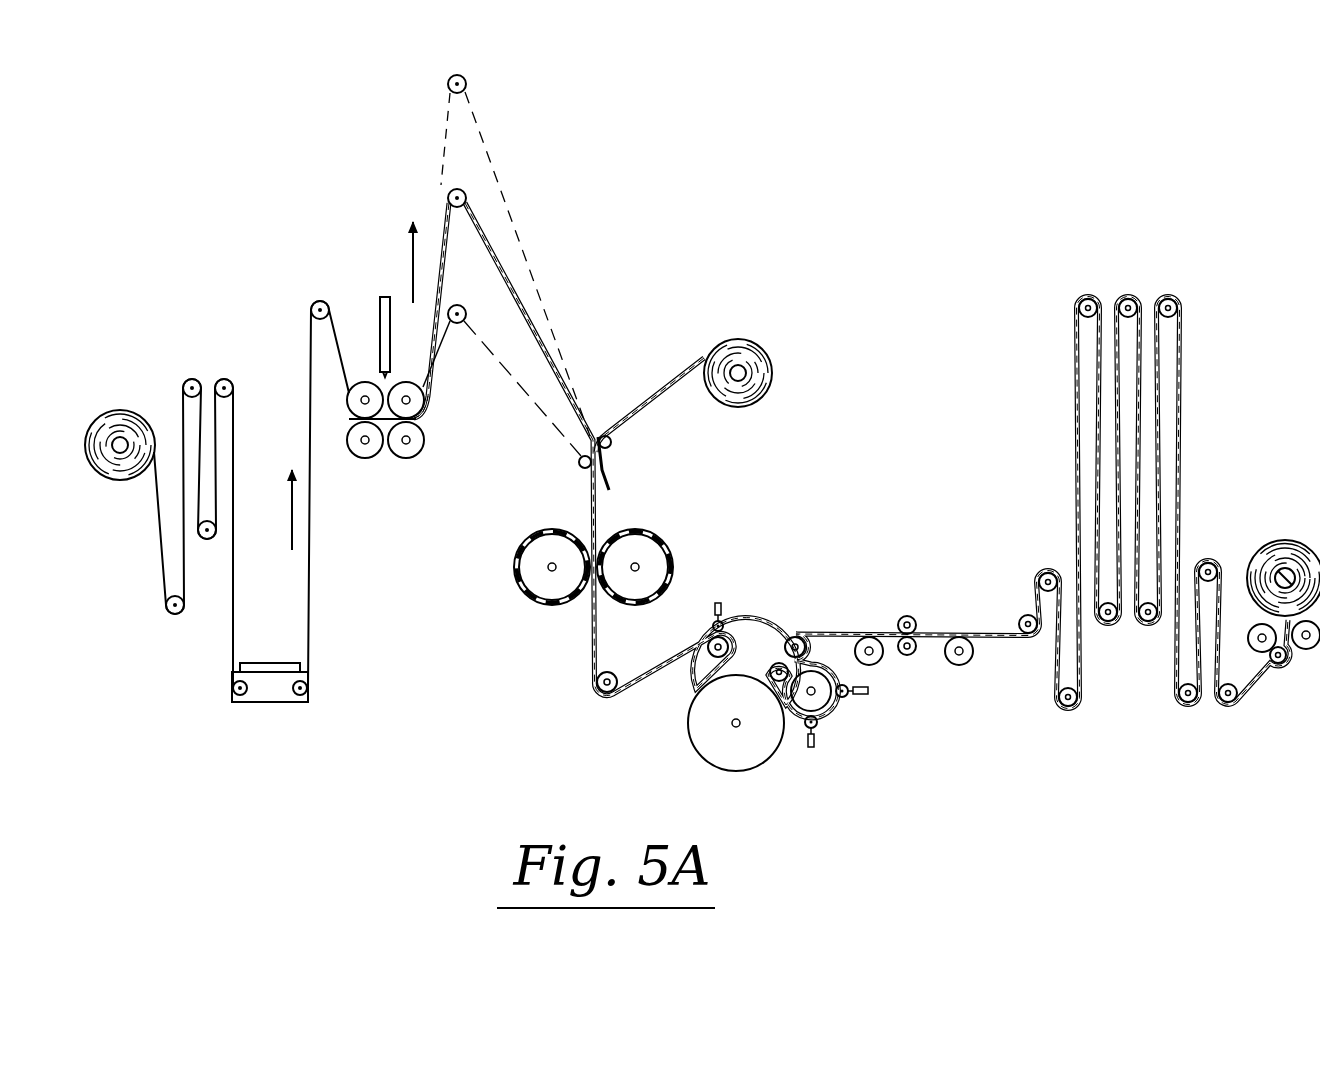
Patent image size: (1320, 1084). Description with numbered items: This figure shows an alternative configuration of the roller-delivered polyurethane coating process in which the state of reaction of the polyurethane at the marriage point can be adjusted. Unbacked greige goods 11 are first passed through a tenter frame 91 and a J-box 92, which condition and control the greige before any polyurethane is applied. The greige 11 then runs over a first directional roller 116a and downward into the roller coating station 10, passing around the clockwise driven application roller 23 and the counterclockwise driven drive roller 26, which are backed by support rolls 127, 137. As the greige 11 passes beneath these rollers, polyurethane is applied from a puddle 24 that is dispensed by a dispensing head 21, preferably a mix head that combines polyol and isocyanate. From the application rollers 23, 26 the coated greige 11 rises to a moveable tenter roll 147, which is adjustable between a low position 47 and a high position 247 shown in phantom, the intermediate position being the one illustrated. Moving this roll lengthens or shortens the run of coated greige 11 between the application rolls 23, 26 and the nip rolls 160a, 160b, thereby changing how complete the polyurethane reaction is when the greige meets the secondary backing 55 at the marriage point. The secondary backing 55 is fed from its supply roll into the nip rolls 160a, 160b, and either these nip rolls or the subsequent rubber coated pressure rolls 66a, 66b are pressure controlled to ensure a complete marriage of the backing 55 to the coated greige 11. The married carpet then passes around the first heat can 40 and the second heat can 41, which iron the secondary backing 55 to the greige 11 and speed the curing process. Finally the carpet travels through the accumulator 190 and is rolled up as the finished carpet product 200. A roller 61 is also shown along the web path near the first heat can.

The greige goods 11 is at (148, 410).
The tenter frame 91 is at (207, 363).
The J-box 92 is at (255, 654).
The first directional roller 116a is at (318, 300).
The dispensing head 21 is at (384, 296).
The roller coating station 10 is at (398, 567).
The polyurethane puddle 24 is at (352, 383).
The application roller 23 is at (383, 385).
The support roll 137 is at (369, 459).
The support roll 127 is at (408, 459).
The drive roller 26 is at (420, 412).
The high position 247 is at (470, 100).
The moveable tenter roll 147 is at (468, 212).
The low position 47 is at (458, 324).
The secondary backing 55 is at (737, 333).
The nip roll 160a is at (612, 445).
The nip roll 160b is at (578, 462).
The rubber coated pressure roll 66a is at (667, 548).
The rubber coated pressure roll 66b is at (537, 600).
The roller 61 is at (708, 660).
The first heat can 40 is at (698, 763).
The second heat can 41 is at (830, 715).
The accumulator 190 is at (1108, 274).
The finished carpet product 200 is at (1288, 523).